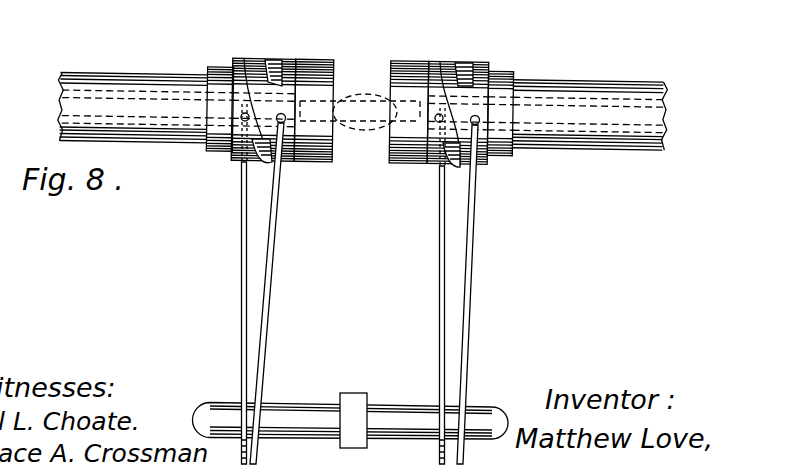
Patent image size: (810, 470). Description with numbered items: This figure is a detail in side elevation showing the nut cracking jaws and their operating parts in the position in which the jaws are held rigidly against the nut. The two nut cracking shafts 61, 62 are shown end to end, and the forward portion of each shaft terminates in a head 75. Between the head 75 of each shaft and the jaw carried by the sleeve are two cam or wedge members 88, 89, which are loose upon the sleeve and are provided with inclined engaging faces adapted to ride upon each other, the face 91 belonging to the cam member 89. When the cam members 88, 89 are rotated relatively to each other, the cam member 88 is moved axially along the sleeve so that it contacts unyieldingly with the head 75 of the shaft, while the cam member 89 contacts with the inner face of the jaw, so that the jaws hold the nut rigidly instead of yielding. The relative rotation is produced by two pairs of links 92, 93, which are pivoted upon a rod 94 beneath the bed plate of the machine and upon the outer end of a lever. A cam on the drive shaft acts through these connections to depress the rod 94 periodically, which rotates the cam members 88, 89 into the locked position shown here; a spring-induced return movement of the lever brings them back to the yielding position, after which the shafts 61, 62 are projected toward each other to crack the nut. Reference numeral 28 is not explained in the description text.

The shaft 61 is at (117, 62).
The shaft 62 is at (595, 140).
The head 75 is at (221, 76).
The inclined engaging face 91 is at (270, 78).
The sleeve 28 is at (318, 78).
The cam member 88 is at (236, 155).
The cam member 89 is at (287, 148).
The link 92 is at (240, 327).
The link 93 is at (274, 292).
The rod 94 is at (409, 428).